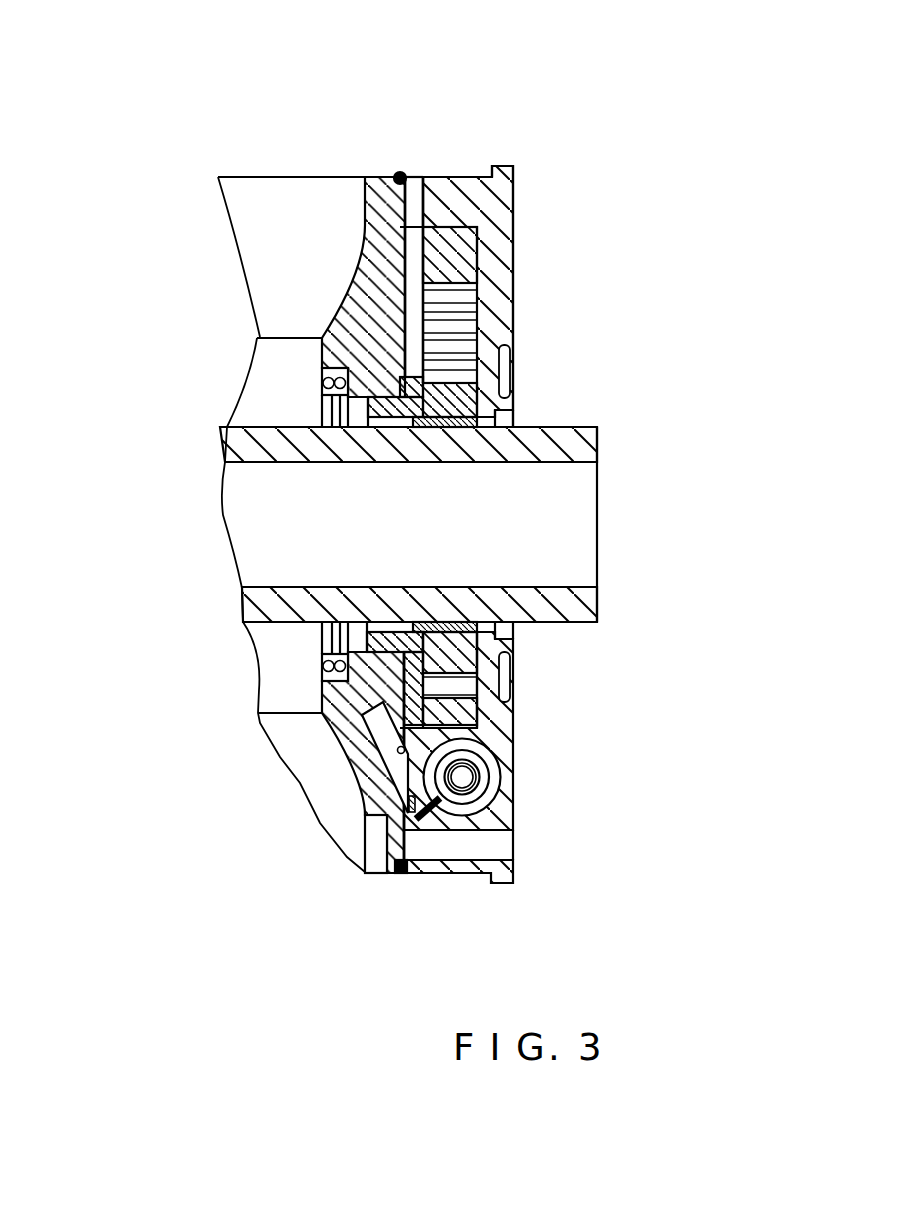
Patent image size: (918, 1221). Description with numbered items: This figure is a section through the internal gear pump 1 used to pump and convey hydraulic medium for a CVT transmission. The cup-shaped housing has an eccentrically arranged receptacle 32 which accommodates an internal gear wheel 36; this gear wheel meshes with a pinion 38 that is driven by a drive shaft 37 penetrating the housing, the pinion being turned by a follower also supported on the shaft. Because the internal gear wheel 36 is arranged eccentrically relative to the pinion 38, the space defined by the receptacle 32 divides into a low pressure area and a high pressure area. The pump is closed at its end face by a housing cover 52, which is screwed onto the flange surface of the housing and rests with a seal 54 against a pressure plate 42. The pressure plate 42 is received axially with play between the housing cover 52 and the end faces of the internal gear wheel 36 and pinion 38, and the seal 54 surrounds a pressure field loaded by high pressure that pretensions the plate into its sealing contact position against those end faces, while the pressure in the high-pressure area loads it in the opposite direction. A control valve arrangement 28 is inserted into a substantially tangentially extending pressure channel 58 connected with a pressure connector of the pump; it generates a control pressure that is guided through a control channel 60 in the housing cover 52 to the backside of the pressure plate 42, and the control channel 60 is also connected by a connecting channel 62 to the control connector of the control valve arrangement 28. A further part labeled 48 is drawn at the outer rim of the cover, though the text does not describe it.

The internal gear pump 1 is at (283, 910).
The control valve arrangement 28 is at (382, 833).
The receptacle 32 is at (497, 284).
The internal gear wheel 36 is at (443, 245).
The drive shaft 37 is at (583, 442).
The pinion 38 is at (480, 400).
The pressure plate 42 is at (505, 677).
The rim flange 48 is at (513, 245).
The housing cover 52 is at (362, 278).
The seal 54 is at (505, 737).
The pressure channel 58 is at (493, 762).
The control channel 60 is at (387, 738).
The connecting channel 62 is at (432, 822).